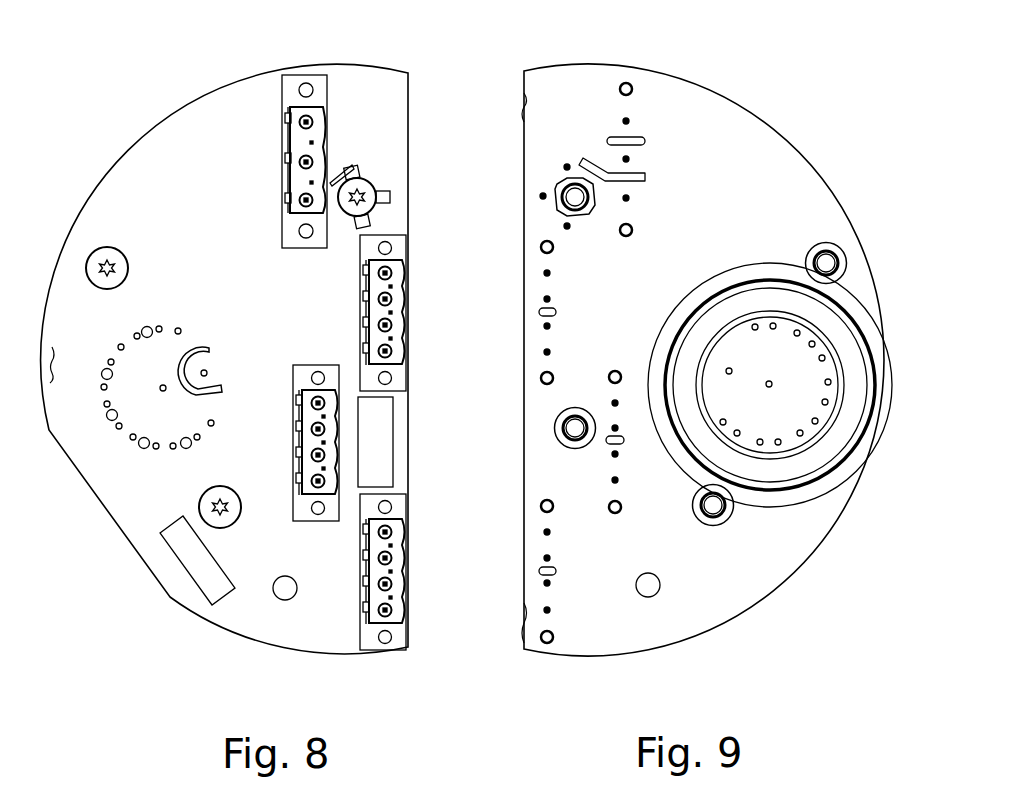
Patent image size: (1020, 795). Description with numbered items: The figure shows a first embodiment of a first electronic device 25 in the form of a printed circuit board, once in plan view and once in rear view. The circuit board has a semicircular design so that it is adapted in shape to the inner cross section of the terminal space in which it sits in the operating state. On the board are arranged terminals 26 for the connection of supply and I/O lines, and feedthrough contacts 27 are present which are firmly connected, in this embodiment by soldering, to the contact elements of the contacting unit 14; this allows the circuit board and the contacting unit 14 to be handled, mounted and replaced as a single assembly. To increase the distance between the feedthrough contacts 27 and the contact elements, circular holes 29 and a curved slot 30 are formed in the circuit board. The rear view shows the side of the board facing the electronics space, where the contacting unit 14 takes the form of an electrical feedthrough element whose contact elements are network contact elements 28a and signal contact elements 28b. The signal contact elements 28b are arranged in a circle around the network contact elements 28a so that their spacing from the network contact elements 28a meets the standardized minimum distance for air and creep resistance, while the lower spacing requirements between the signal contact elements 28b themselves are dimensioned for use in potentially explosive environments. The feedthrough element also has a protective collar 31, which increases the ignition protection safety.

In FIG. 8, the first electronic device 25 is at (158, 90).
In FIG. 8, the terminals 26 is at (303, 82).
In FIG. 8, the feedthrough contacts 27 is at (110, 359).
In FIG. 9, the feedthrough contacts 27 is at (546, 296).
In FIG. 8, the circular holes 29 is at (141, 448).
In FIG. 8, the curved slot 30 is at (209, 350).
In FIG. 9, the contacting unit 14 is at (853, 307).
In FIG. 9, the network contact elements 28a is at (769, 381).
In FIG. 9, the signal contact elements 28b is at (828, 404).
In FIG. 9, the protective collar 31 is at (738, 467).